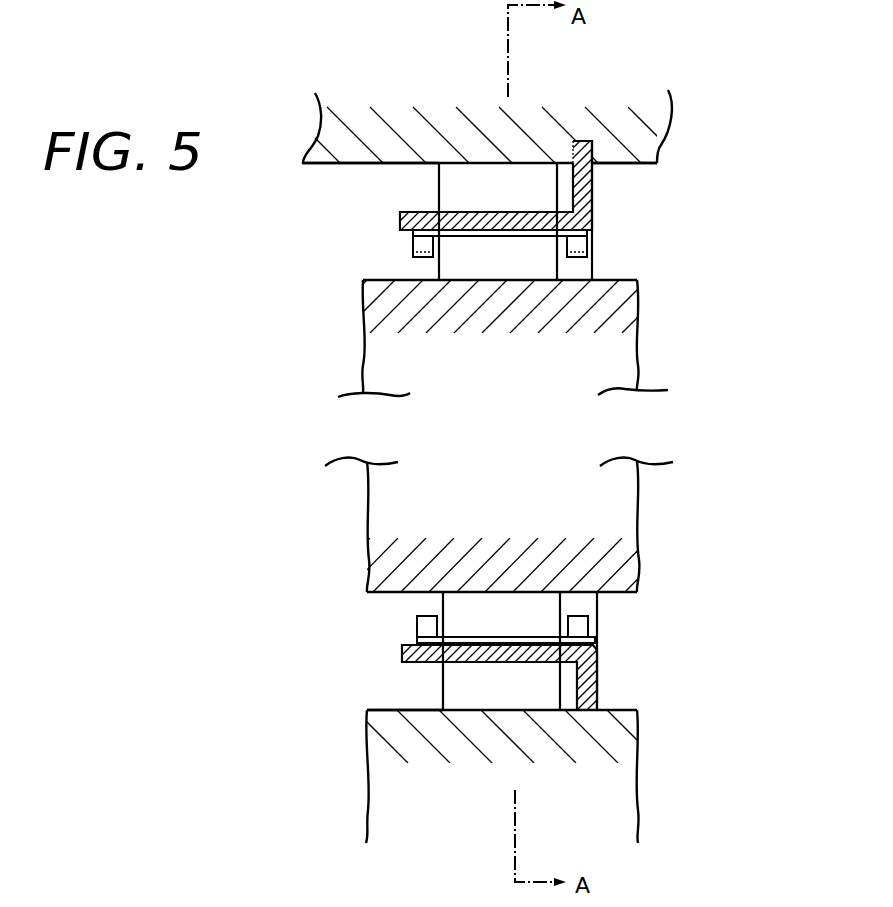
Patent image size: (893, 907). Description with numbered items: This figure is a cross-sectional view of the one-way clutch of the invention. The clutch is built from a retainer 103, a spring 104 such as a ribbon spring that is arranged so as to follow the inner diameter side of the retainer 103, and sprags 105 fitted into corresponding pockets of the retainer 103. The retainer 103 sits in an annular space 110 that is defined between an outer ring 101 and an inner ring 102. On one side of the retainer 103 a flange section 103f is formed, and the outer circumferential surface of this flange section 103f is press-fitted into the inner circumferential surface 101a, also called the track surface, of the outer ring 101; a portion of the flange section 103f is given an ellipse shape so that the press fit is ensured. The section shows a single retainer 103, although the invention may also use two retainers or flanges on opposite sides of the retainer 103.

The outer ring 101 is at (610, 117).
The inner circumferential surface 101a is at (613, 164).
The inner ring 102 is at (625, 315).
The retainer 103 is at (400, 222).
The flange section 103f is at (597, 198).
The spring 104 is at (413, 253).
The sprag 105 is at (520, 253).
The annular space 110 is at (417, 183).